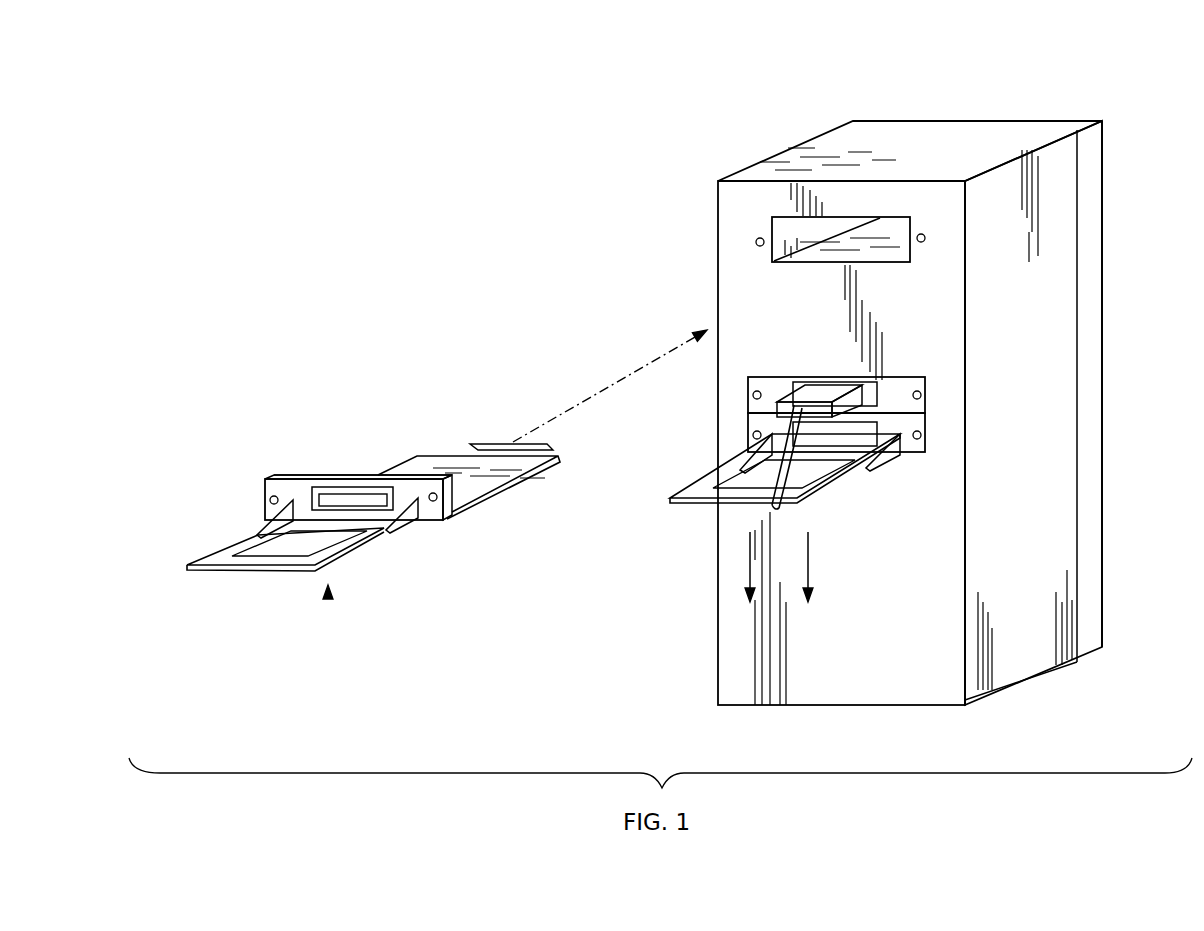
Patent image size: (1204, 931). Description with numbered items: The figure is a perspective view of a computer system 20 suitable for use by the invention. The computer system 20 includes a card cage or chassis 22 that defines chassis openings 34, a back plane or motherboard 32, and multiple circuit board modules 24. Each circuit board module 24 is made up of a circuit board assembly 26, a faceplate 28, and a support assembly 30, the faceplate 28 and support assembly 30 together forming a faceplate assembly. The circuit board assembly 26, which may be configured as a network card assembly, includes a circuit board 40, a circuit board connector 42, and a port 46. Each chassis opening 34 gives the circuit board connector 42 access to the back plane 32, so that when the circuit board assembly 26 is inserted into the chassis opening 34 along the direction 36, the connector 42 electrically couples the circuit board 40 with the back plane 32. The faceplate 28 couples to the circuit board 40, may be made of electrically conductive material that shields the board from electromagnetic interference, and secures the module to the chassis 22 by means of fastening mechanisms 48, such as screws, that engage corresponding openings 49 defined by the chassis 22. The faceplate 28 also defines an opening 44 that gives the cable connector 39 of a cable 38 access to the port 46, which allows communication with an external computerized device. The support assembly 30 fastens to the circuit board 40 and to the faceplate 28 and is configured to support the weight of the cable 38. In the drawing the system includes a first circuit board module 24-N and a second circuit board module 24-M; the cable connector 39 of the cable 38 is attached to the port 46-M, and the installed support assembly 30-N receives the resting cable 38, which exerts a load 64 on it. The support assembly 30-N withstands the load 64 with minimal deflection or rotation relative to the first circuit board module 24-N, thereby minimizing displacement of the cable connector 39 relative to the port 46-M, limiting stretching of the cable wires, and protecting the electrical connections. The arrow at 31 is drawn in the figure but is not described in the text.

The computer system 20 is at (649, 118).
The chassis 22 is at (1019, 105).
The circuit board module 24 is at (267, 358).
The second circuit board module 24-M is at (942, 396).
The first circuit board module 24-N is at (942, 438).
The circuit board assembly 26 is at (405, 404).
The faceplate 28 is at (445, 511).
The support assembly 30 is at (211, 568).
The support assembly 30-N is at (795, 492).
The door opening direction 31 is at (329, 599).
The back plane 32 is at (1103, 237).
The chassis opening 34 is at (778, 218).
The direction 36 is at (653, 355).
The cable 38 is at (767, 505).
The cable connector 39 is at (807, 395).
The circuit board 40 is at (402, 465).
The circuit board connector 42 is at (488, 444).
The opening 44 is at (327, 488).
The port 46 is at (373, 502).
The port 46-M is at (873, 397).
The fastening mechanisms 48 is at (270, 498).
The openings 49 is at (755, 243).
The load 64 is at (808, 560).